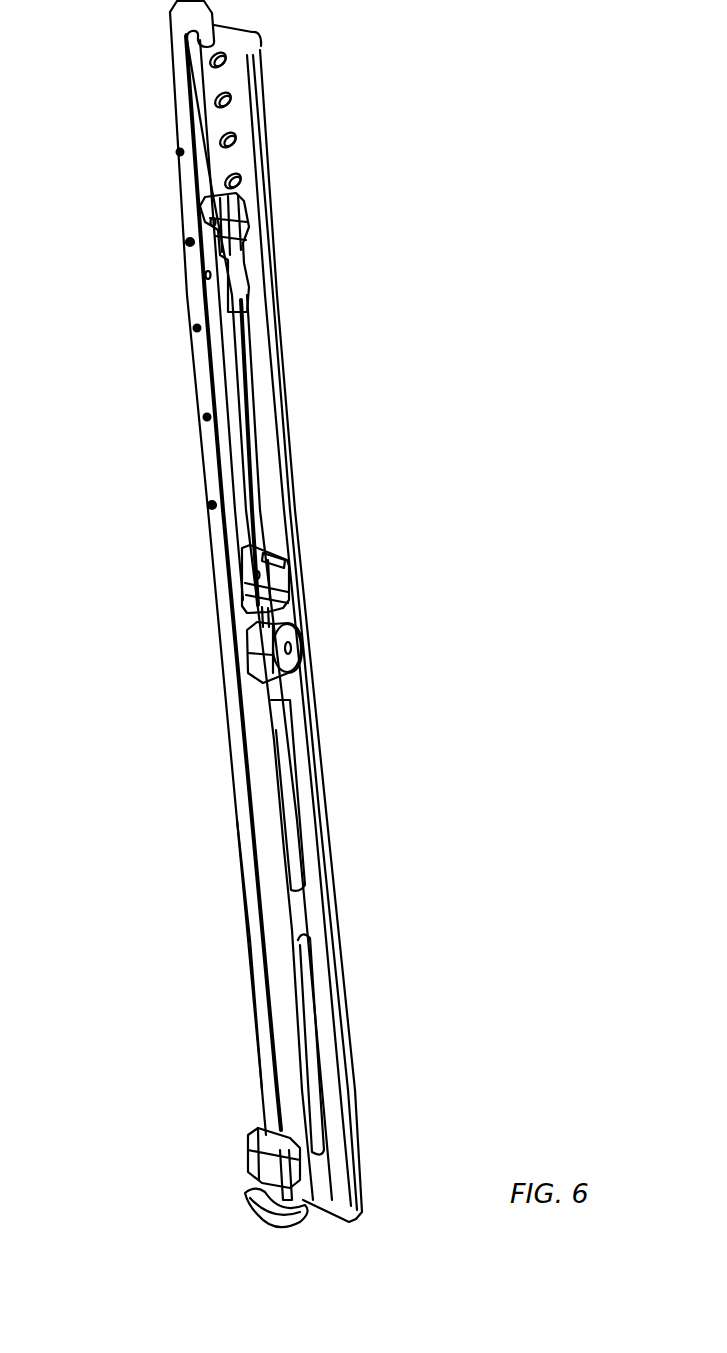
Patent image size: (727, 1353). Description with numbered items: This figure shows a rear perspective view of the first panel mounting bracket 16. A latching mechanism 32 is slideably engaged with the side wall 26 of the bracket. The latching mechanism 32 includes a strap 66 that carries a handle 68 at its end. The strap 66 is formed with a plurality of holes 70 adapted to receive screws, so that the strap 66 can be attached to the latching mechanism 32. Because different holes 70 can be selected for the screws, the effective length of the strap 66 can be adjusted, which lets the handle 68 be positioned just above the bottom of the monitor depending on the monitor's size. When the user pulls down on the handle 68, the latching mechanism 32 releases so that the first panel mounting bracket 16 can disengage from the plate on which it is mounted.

The first panel mounting bracket 16 is at (293, 247).
The latching mechanism 32 is at (201, 459).
The holes 70 is at (176, 157).
The side wall 26 is at (262, 726).
The strap 66 is at (240, 875).
The handle 68 is at (268, 1228).